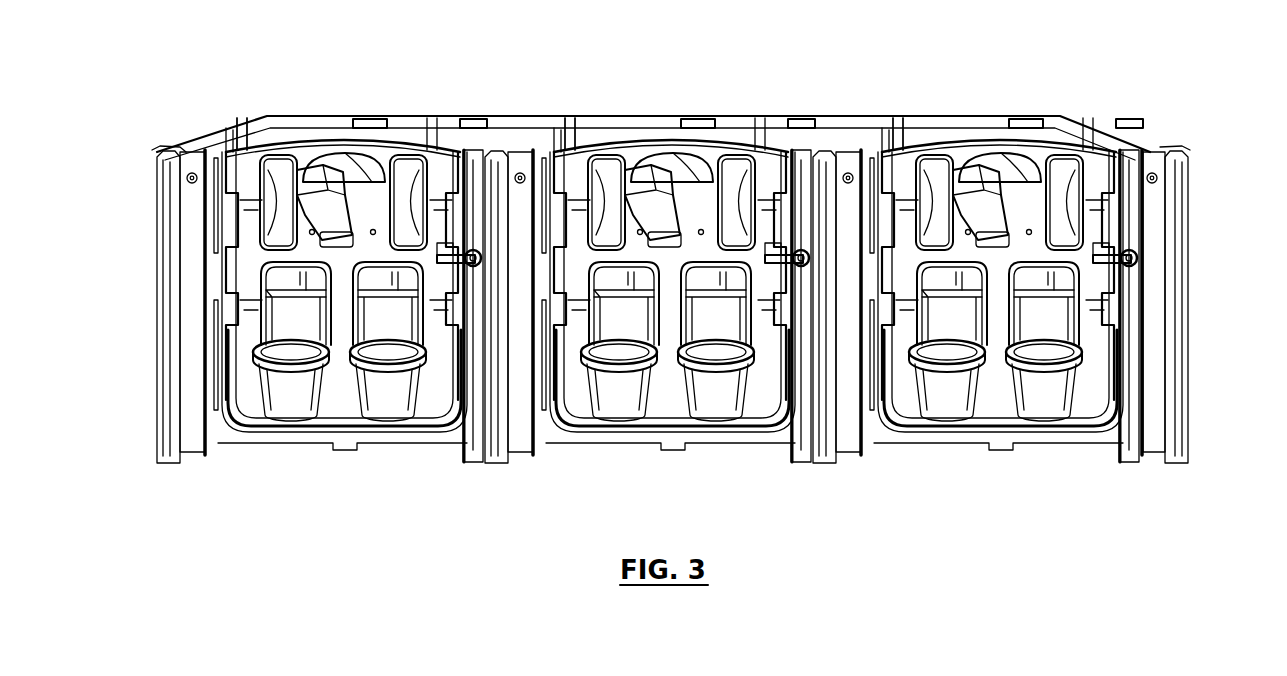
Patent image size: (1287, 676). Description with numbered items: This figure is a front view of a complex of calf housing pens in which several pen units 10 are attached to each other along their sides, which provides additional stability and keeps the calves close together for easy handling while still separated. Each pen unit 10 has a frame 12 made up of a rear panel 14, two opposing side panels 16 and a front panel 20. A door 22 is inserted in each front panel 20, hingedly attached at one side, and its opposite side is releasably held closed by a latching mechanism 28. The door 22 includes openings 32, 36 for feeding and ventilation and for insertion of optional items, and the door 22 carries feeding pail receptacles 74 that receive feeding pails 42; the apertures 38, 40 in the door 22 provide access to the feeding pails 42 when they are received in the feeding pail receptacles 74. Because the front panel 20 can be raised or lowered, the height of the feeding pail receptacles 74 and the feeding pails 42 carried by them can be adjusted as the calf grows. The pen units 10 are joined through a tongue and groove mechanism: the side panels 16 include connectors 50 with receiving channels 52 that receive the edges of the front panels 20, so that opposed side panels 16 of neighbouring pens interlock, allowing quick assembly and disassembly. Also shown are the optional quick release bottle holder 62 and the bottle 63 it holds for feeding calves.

The pen unit 10 is at (317, 98).
The frame 12 is at (229, 118).
The rear panel 14 is at (302, 128).
The side panel 16 is at (265, 128).
The front panel 20 is at (222, 440).
The door 22 is at (236, 378).
The latching mechanism 28 is at (450, 245).
The opening 32 is at (270, 203).
The opening 36 is at (408, 160).
The aperture 38 is at (290, 307).
The aperture 40 is at (374, 272).
The feeding pail 42 is at (290, 403).
The connector 50 is at (191, 163).
The receiving channel 52 is at (150, 150).
The quick release bottle holder 62 is at (322, 178).
The bottle 63 is at (308, 166).
The feeding pail receptacle 74 is at (250, 340).